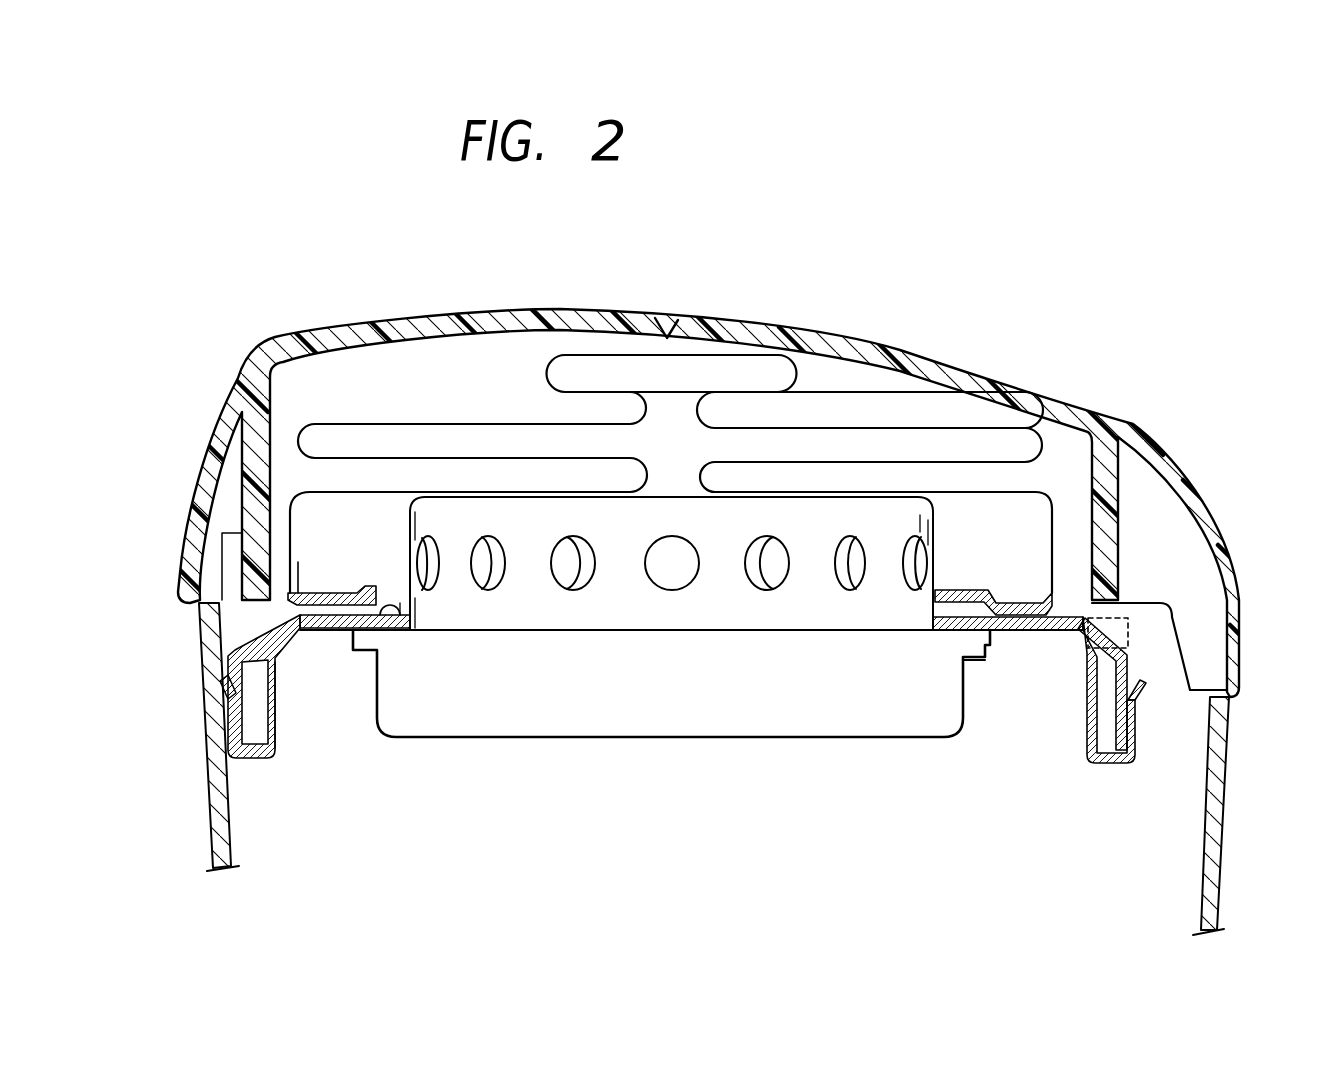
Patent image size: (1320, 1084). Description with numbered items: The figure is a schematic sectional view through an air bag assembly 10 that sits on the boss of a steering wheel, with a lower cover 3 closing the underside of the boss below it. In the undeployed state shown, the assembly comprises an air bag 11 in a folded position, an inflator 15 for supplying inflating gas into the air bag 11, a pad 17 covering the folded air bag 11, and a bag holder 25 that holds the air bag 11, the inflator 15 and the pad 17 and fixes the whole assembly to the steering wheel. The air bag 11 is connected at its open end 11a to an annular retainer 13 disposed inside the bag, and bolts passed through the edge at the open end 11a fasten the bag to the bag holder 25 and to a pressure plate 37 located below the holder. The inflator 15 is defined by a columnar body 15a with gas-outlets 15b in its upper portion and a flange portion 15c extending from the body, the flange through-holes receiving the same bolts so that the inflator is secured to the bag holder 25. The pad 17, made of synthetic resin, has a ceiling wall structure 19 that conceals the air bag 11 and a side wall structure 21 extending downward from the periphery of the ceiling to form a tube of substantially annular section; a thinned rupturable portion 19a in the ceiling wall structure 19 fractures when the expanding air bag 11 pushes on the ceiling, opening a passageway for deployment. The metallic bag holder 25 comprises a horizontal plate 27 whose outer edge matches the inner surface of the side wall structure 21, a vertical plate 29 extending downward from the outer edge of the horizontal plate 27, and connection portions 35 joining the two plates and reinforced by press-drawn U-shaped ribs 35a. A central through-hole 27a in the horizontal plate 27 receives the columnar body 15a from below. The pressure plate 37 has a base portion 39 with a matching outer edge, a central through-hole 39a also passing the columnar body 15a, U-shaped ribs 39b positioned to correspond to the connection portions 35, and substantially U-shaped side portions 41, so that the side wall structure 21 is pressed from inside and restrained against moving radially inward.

The lower cover 3 is at (215, 800).
The air bag assembly 10 is at (500, 785).
The air bag 11 is at (547, 372).
The open end 11a is at (927, 588).
The annular retainer 13 is at (1066, 612).
The inflator 15 is at (722, 737).
The columnar body 15a is at (815, 712).
The gas-outlets 15b is at (657, 580).
The flange portion 15c is at (982, 647).
The pad 17 is at (905, 348).
The ceiling wall structure 19 is at (822, 348).
The rupturable portion 19a is at (658, 334).
The side wall structure 21 is at (253, 550).
The bag holder 25 is at (1068, 612).
The horizontal plate 27 is at (1043, 638).
The through-hole 27a is at (391, 610).
The vertical plate 29 is at (230, 664).
The connection portions 35 is at (1128, 609).
The U-shaped ribs 35a is at (1130, 640).
The pressure plate 37 is at (282, 688).
The base portion 39 is at (1010, 634).
The through-hole 39a is at (398, 618).
The U-shaped ribs 39b is at (1064, 668).
The U-shaped side portions 41 is at (1090, 760).